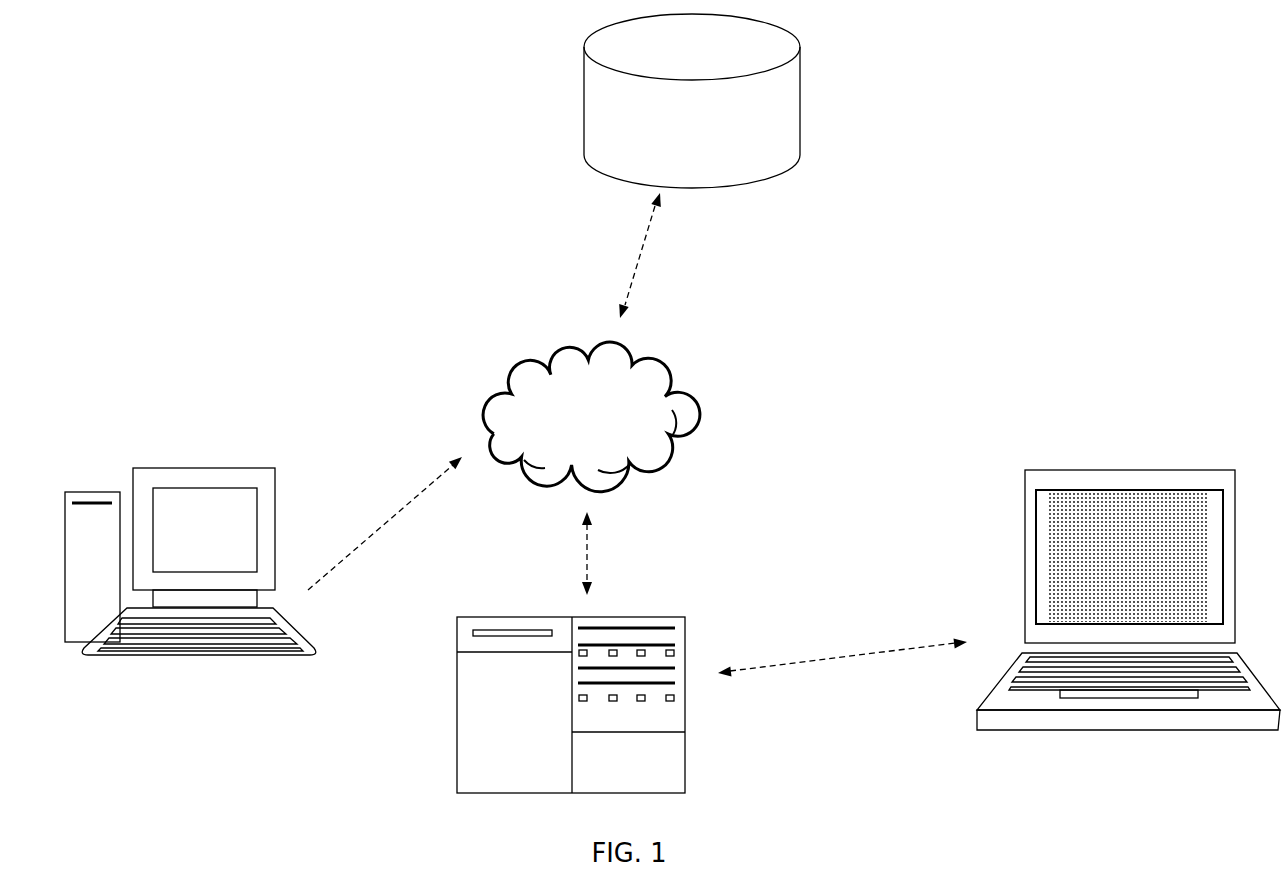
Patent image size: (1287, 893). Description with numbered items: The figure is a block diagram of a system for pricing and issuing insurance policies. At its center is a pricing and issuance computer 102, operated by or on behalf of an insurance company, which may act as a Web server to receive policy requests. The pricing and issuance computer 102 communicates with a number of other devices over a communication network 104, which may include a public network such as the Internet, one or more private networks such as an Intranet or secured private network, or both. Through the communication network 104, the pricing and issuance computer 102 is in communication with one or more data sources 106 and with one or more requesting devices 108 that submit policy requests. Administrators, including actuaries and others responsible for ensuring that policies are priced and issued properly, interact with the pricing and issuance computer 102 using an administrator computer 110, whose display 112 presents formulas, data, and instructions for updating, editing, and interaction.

The pricing and issuance computer 102 is at (483, 769).
The communication network 104 is at (652, 392).
The data source 106 is at (692, 101).
The requesting device 108 is at (208, 657).
The administrator computer 110 is at (1002, 717).
The display 112 is at (1062, 532).